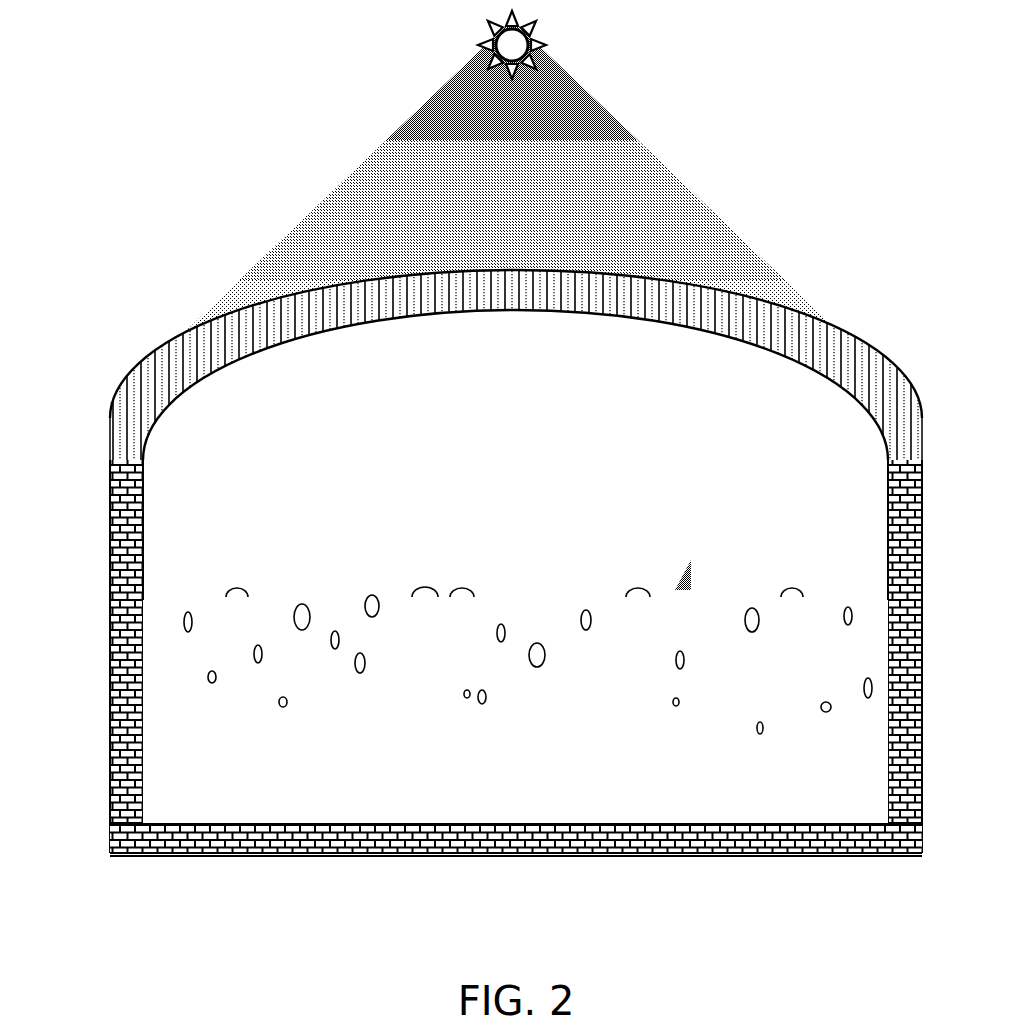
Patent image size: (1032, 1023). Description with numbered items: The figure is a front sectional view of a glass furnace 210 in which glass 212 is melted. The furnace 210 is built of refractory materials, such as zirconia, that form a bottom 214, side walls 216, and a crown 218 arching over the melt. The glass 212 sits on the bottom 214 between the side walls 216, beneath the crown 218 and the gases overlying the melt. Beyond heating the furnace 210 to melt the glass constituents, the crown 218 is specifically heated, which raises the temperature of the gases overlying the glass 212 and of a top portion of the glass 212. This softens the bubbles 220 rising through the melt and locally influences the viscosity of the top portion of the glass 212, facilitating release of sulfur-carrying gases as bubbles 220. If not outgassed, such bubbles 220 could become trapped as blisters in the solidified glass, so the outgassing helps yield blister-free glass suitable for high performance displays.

The furnace 210 is at (229, 169).
The glass 212 is at (397, 783).
The bottom 214 is at (325, 857).
The side walls 216 is at (137, 705).
The crown 218 is at (182, 364).
The bubbles 220 is at (681, 662).